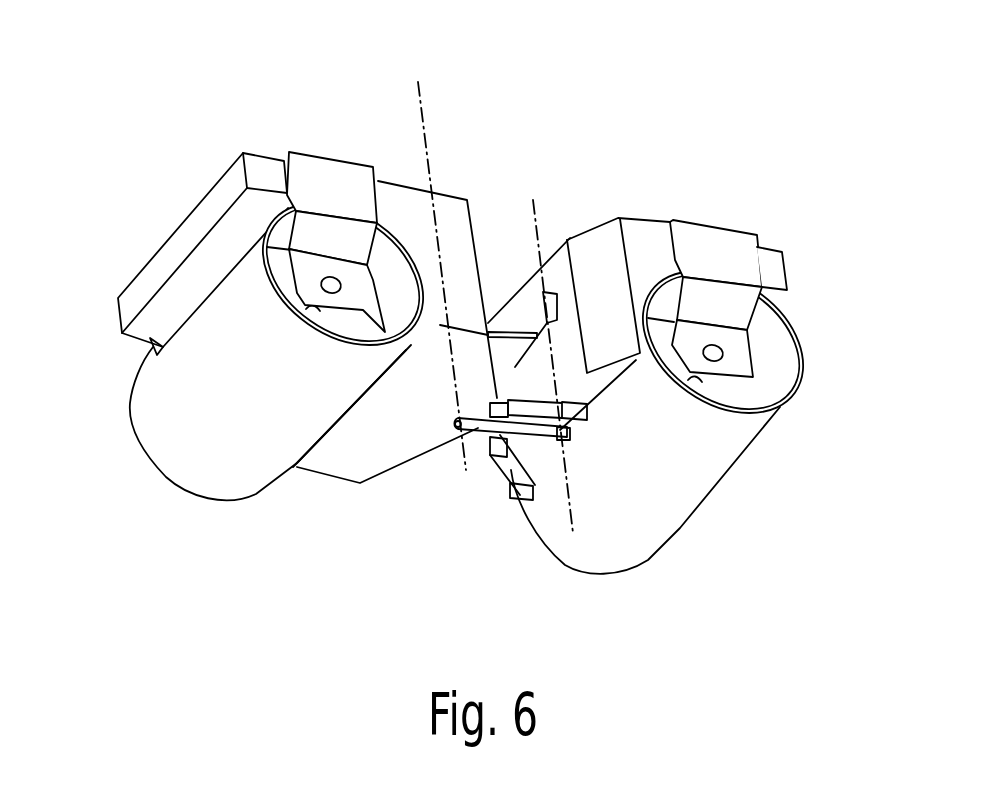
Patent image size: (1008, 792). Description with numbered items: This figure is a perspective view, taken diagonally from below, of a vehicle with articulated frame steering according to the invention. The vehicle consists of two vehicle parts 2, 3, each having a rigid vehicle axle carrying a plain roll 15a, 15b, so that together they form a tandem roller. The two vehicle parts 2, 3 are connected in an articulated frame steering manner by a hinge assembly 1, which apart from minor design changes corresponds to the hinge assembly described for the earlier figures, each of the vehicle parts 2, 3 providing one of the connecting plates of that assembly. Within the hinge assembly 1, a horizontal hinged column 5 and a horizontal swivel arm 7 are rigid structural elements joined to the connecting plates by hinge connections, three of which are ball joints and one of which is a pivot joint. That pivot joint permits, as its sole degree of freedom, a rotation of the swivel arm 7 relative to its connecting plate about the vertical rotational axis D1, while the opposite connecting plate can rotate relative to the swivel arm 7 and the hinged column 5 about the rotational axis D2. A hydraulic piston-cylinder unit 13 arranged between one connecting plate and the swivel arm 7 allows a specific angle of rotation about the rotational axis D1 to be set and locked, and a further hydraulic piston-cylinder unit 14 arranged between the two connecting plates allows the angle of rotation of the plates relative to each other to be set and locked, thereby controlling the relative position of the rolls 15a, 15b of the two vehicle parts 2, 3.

The hinge assembly 1 is at (472, 482).
The vehicle part 2 is at (401, 202).
The vehicle part 3 is at (652, 248).
The hinged column 5 is at (508, 345).
The swivel arm 7 is at (460, 443).
The hydraulic piston-cylinder unit 13 is at (497, 465).
The hydraulic piston-cylinder unit 14 is at (540, 412).
The plain roll 15a is at (198, 453).
The plain roll 15b is at (683, 457).
The rotational axis D1 is at (535, 212).
The rotational axis D2 is at (423, 117).